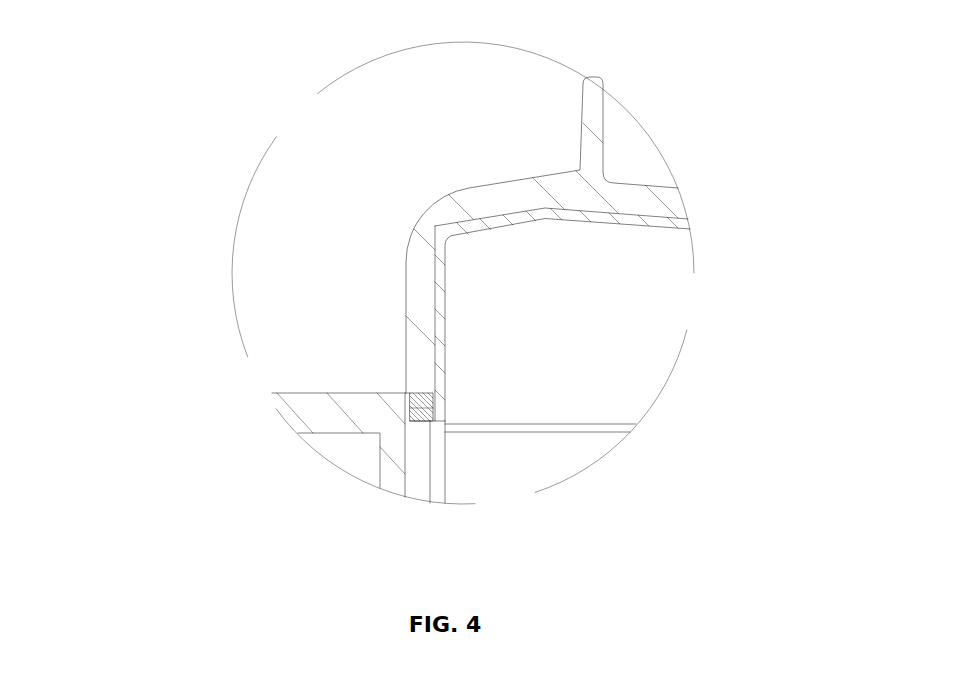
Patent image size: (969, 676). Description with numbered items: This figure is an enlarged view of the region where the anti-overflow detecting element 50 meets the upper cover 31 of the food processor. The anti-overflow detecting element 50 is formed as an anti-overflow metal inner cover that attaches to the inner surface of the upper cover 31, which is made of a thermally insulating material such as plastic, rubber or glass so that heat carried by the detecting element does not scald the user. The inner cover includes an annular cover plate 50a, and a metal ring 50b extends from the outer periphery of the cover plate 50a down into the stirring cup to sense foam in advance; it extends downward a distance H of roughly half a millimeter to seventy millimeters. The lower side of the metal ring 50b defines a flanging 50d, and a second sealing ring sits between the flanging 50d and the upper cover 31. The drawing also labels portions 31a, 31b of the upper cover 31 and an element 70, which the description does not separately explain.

The upper cover 31 is at (365, 211).
The upper flange portion of body panel 31a is at (495, 192).
The side wall portion of body panel 31b is at (420, 312).
The anti-overflow detecting element 50 is at (625, 374).
The annular cover plate 50a is at (608, 217).
The metal ring 50b is at (445, 326).
The flanging 50d is at (430, 421).
The fastening member 70 is at (417, 402).